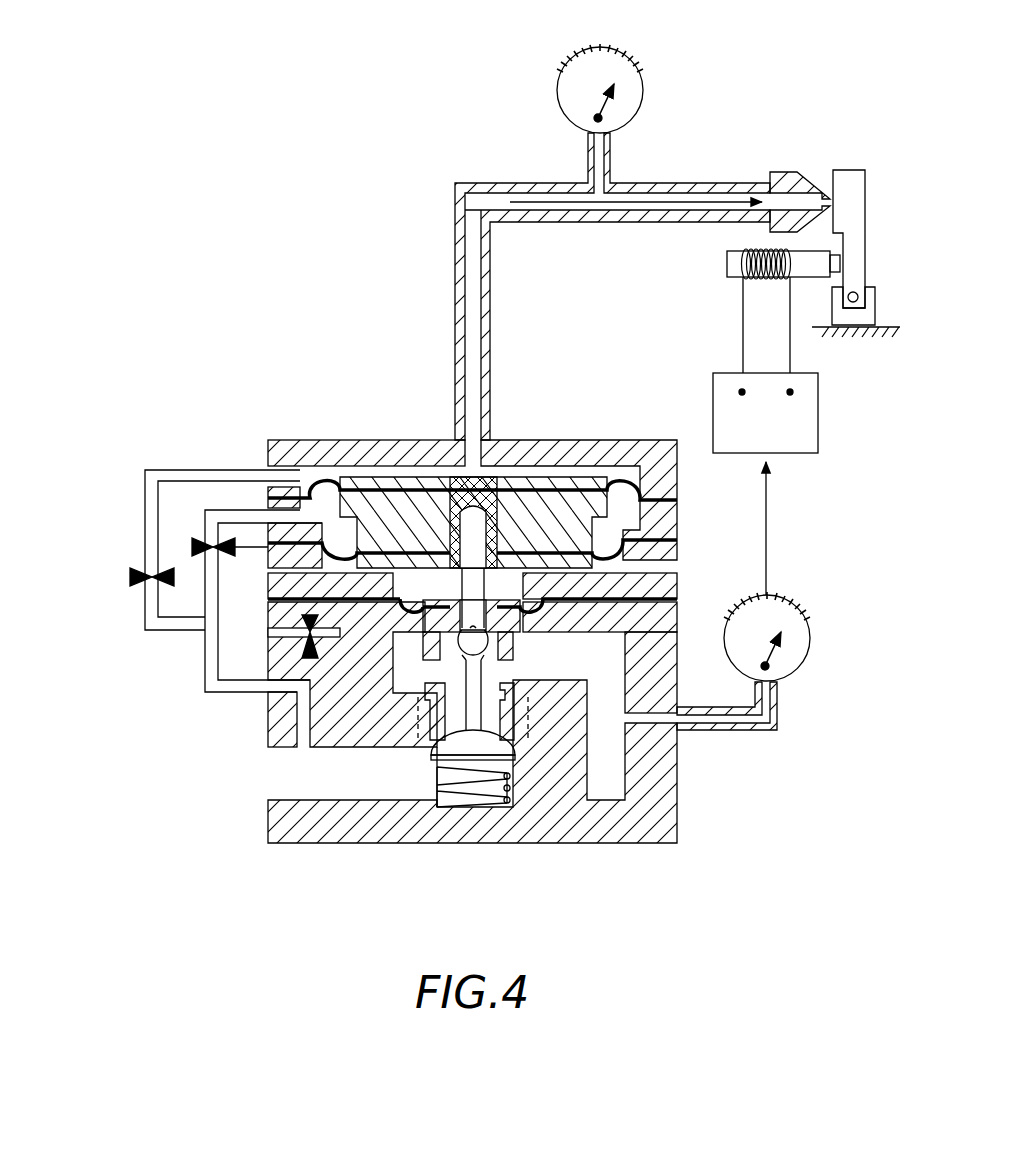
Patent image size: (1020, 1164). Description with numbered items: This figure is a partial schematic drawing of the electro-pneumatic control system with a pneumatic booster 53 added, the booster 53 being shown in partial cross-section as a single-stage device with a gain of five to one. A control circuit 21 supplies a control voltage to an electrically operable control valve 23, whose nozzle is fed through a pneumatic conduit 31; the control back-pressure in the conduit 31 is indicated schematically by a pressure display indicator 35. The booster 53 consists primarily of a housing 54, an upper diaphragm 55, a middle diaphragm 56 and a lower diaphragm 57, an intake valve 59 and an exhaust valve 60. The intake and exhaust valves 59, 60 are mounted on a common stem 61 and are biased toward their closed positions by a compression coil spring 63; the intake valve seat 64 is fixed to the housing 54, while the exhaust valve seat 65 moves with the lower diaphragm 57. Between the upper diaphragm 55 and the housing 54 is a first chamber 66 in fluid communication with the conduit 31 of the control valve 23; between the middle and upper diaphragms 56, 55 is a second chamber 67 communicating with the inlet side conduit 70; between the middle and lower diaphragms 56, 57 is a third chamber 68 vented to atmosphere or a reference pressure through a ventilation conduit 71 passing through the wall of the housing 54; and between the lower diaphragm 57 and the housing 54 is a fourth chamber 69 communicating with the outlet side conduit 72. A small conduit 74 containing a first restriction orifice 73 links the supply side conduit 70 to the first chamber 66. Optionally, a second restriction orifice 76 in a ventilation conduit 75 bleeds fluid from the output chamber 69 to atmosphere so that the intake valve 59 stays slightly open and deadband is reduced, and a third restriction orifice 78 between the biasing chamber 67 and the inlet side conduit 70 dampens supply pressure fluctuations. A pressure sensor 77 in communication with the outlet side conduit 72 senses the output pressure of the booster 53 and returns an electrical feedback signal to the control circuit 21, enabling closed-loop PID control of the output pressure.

The control circuit 21 is at (818, 442).
The control valve 23 is at (895, 152).
The pneumatic conduit 31 is at (491, 366).
The pressure display indicator 35 is at (640, 62).
The pneumatic booster 53 is at (95, 450).
The housing 54 is at (630, 440).
The upper diaphragm 55 is at (323, 486).
The middle diaphragm 56 is at (335, 566).
The lower diaphragm 57 is at (398, 612).
The intake valve 59 is at (498, 758).
The exhaust valve 60 is at (480, 628).
The common stem 61 is at (430, 722).
The compression coil spring 63 is at (448, 796).
The intake valve seat 64 is at (516, 727).
The exhaust valve seat 65 is at (492, 643).
The first chamber 66 is at (384, 471).
The second chamber 67 is at (459, 522).
The third chamber 68 is at (413, 590).
The fourth chamber 69 is at (461, 637).
The inlet side conduit 70 is at (262, 776).
The ventilation conduit 71 is at (680, 566).
The outlet side conduit 72 is at (686, 777).
The first restriction orifice 73 is at (130, 580).
The small conduit 74 is at (143, 488).
The ventilation conduit 75 is at (300, 640).
The second restriction orifice 76 is at (285, 627).
The pressure sensor 77 is at (815, 607).
The third restriction orifice 78 is at (192, 545).